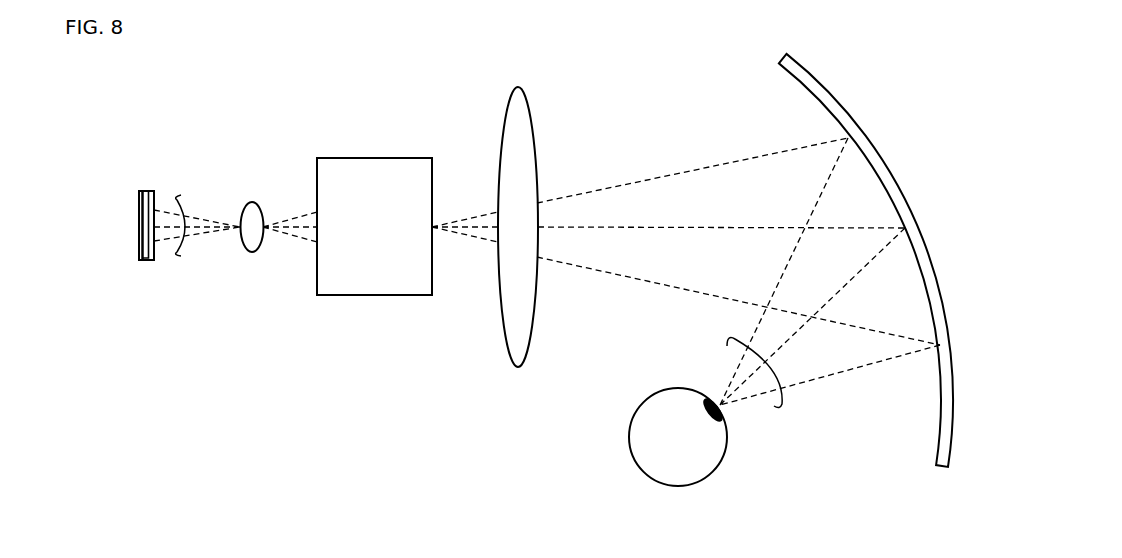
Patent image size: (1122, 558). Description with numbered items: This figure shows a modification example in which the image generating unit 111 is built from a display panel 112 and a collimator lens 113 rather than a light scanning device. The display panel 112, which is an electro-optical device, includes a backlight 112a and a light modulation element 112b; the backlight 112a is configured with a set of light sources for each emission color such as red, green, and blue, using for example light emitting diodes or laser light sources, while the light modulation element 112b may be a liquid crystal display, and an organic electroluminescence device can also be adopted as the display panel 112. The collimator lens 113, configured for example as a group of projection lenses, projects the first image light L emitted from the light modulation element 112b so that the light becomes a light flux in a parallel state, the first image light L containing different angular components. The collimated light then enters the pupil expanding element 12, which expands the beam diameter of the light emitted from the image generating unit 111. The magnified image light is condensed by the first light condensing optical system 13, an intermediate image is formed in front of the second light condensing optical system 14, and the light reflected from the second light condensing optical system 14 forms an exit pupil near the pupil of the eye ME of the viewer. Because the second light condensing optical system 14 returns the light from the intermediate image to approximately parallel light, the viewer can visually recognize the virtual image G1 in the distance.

The image generating unit 111 is at (185, 321).
The display panel 112 is at (152, 292).
The backlight 112a is at (142, 260).
The light modulation element 112b is at (180, 265).
The collimator lens 113 is at (253, 241).
The first image light L is at (183, 202).
The pupil expanding element 12 is at (387, 165).
The first light condensing optical system 13 is at (522, 100).
The second light condensing optical system 14 is at (812, 86).
The eye ME is at (695, 465).
The virtual image G1 is at (783, 398).